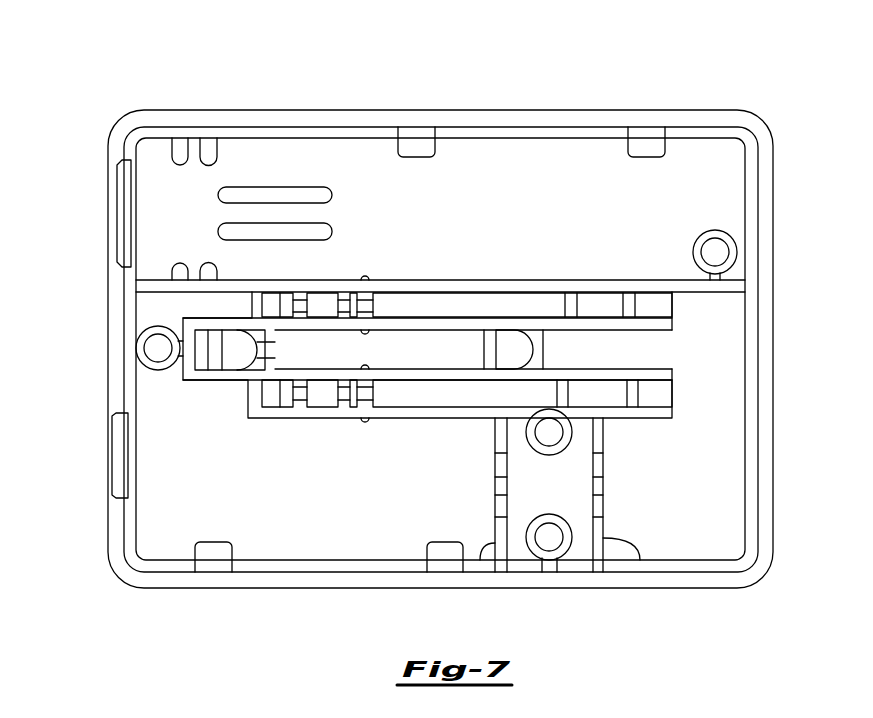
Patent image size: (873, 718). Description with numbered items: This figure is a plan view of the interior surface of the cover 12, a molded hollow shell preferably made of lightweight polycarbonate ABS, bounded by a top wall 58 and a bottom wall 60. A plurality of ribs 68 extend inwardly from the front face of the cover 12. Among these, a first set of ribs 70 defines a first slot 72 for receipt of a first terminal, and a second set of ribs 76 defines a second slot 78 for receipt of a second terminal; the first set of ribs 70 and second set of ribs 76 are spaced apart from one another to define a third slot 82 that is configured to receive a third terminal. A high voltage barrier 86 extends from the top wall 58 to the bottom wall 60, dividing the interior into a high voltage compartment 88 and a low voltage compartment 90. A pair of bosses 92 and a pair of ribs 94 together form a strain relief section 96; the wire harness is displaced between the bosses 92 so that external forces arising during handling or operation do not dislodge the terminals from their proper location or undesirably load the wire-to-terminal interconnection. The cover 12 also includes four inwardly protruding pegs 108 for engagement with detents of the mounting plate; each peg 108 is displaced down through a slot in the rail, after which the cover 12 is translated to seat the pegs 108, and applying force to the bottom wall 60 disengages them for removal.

The cover 12 is at (780, 96).
The top wall 58 is at (764, 210).
The bottom wall 60 is at (110, 395).
The ribs 68 is at (547, 273).
The first set of ribs 70 is at (473, 317).
The first slot 72 is at (507, 303).
The second set of ribs 76 is at (396, 383).
The second slot 78 is at (465, 393).
The third slot 82 is at (417, 347).
The high voltage barrier 86 is at (235, 278).
The high voltage compartment 88 is at (281, 500).
The low voltage compartment 90 is at (596, 253).
The bosses 92 is at (543, 455).
The ribs 94 is at (480, 557).
The strain relief section 96 is at (566, 517).
The pegs 108 is at (416, 157).